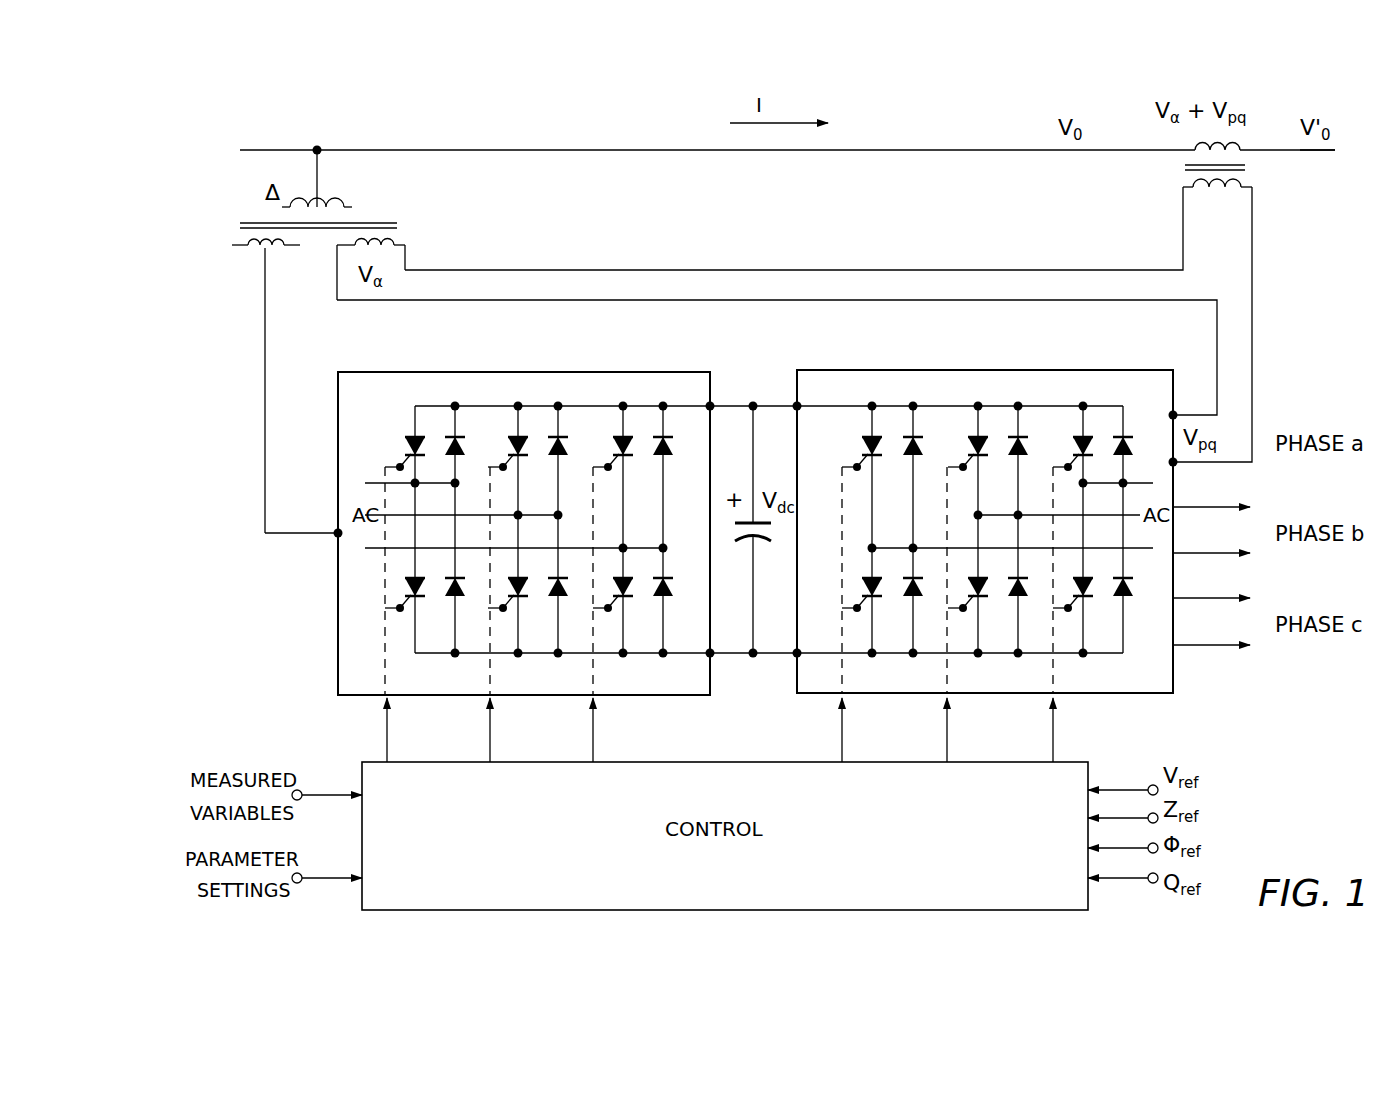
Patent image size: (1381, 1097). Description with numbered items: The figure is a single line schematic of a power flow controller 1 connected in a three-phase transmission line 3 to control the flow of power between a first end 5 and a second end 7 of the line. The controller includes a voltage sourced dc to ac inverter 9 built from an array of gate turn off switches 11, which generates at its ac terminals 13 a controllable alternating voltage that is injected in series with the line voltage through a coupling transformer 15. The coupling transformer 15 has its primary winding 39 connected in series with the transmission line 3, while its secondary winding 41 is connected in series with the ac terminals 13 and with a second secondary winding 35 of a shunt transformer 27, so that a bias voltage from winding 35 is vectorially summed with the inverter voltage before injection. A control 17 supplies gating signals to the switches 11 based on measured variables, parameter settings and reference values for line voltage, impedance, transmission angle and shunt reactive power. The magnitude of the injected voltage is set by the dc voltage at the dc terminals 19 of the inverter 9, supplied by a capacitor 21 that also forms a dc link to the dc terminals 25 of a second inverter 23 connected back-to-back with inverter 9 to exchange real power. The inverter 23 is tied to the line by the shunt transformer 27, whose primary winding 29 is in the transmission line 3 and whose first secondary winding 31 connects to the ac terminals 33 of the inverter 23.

The power flow controller 1 is at (708, 343).
The transmission line 3 is at (432, 150).
The first end 5 is at (243, 150).
The second end 7 is at (1335, 150).
The inverter 9 is at (981, 517).
The gate turn off switches 11 is at (1135, 445).
The ac terminals 13 is at (1173, 413).
The coupling transformer 15 is at (1232, 183).
The control 17 is at (1078, 762).
The dc terminals 19 is at (797, 405).
The capacitor 21 is at (758, 543).
The inverter 23 is at (510, 513).
The dc terminals 25 is at (713, 405).
The shunt transformer 27 is at (295, 347).
The primary winding 29 is at (327, 205).
The first secondary winding 31 is at (255, 252).
The ac terminals 33 is at (338, 533).
The second secondary winding 35 is at (403, 243).
The primary winding 39 is at (1198, 131).
The secondary winding 41 is at (1227, 190).